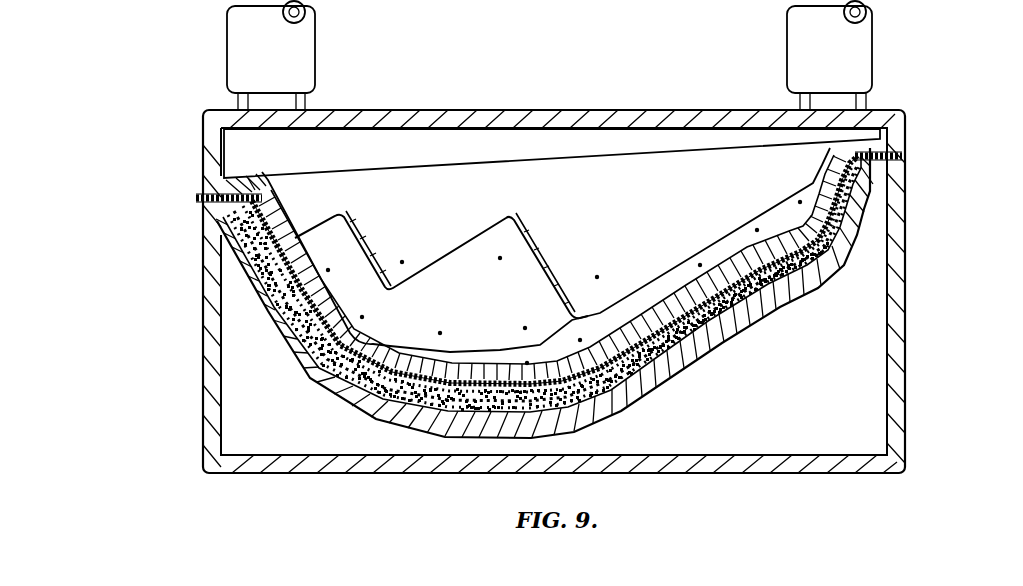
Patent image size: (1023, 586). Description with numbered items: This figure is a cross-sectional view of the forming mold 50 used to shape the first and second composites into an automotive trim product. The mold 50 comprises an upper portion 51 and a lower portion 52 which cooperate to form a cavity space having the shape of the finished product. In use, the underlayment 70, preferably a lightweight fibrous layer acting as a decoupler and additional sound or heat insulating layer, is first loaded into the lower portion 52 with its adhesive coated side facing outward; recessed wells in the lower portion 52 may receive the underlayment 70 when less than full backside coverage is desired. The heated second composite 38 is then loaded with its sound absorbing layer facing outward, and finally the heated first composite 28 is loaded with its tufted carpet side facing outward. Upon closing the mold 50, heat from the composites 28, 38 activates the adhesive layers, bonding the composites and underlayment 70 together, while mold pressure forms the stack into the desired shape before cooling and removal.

The forming mold 50 is at (565, 237).
The upper portion 51 is at (450, 138).
The lower portion 52 is at (830, 372).
The second composite 38 is at (190, 196).
The first composite 28 is at (683, 310).
The underlayment 70 is at (283, 310).